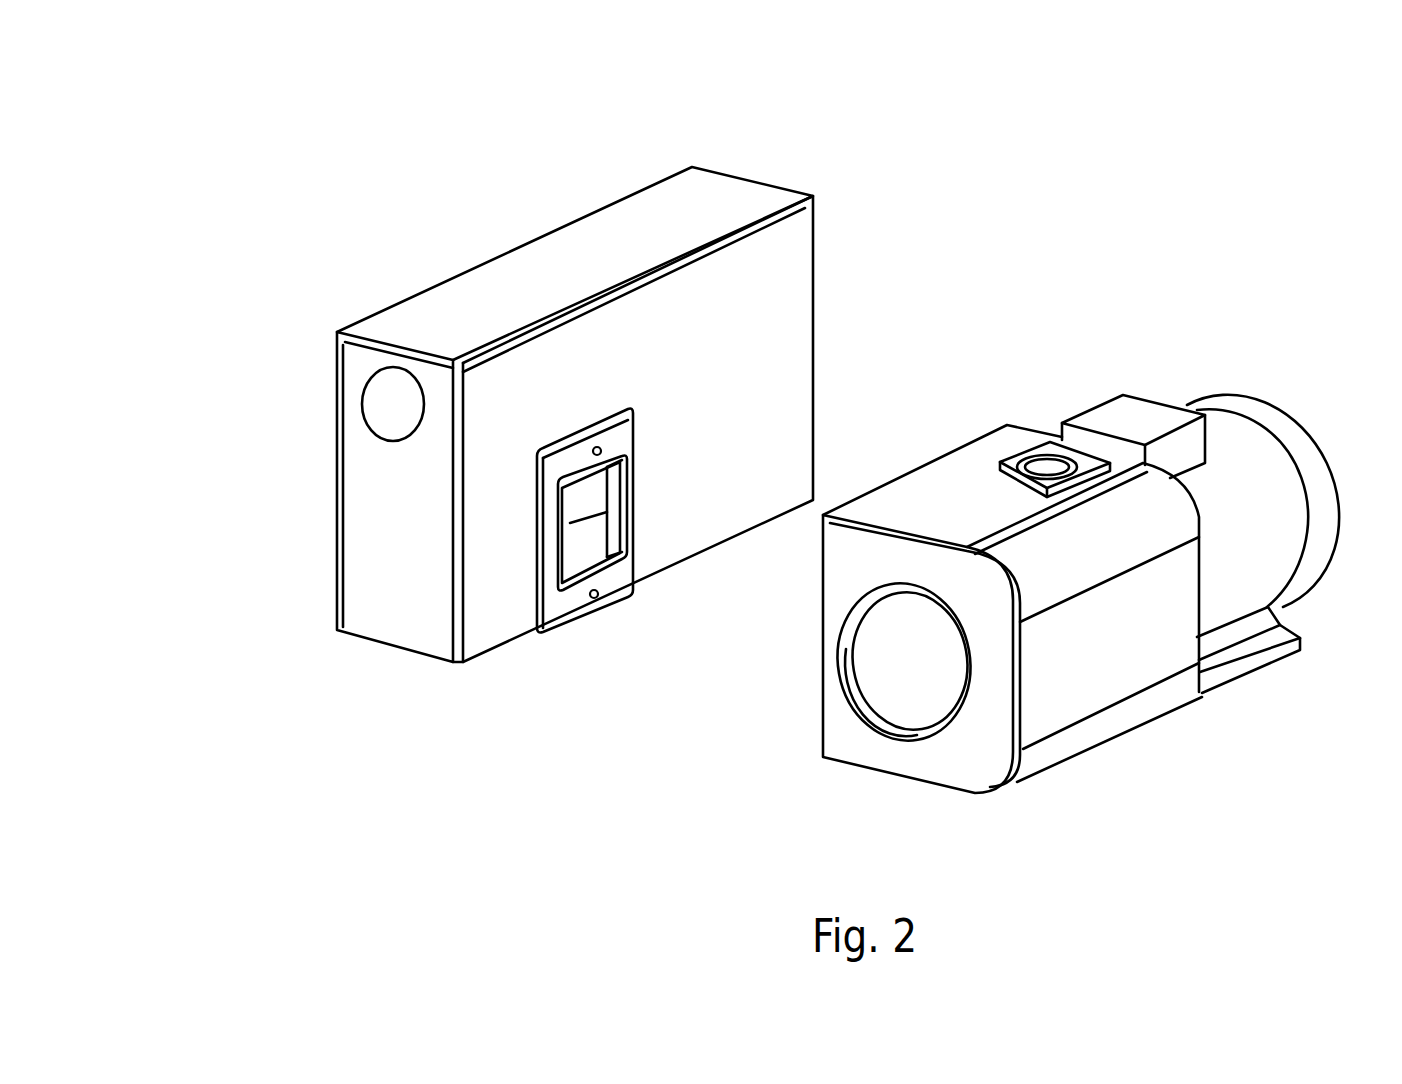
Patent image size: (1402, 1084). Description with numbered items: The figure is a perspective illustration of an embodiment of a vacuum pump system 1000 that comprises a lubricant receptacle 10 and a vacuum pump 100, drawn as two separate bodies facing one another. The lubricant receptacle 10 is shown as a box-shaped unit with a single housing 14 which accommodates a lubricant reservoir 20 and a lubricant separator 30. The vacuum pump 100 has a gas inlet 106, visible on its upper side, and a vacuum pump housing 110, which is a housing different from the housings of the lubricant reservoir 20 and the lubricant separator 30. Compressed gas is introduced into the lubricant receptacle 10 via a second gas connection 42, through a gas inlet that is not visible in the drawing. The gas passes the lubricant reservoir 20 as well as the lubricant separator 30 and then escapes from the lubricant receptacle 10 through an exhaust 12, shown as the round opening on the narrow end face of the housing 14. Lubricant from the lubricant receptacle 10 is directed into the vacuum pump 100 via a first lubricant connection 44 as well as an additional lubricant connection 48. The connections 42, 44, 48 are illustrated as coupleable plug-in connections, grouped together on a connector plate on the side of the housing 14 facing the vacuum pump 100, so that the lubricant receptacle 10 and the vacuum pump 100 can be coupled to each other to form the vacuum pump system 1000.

The lubricant receptacle 10 is at (425, 190).
The exhaust 12 is at (388, 400).
The housing 14 is at (715, 193).
The lubricant reservoir 20 is at (888, 365).
The lubricant separator 30 is at (915, 187).
The second gas connection 42 is at (583, 533).
The first lubricant connection 44 is at (583, 610).
The additional lubricant connection 48 is at (577, 458).
The vacuum pump 100 is at (1081, 613).
The gas inlet 106 is at (1046, 462).
The vacuum pump housing 110 is at (1133, 655).
The vacuum pump system 1000 is at (1052, 147).